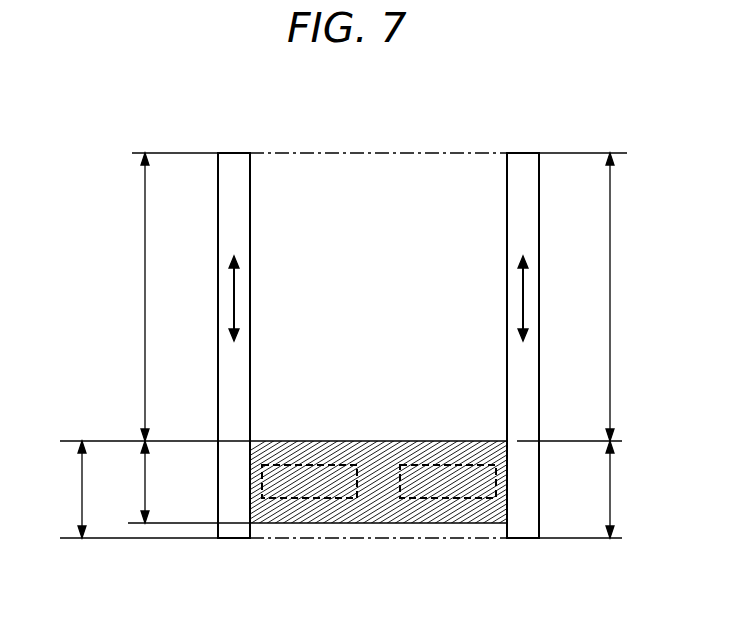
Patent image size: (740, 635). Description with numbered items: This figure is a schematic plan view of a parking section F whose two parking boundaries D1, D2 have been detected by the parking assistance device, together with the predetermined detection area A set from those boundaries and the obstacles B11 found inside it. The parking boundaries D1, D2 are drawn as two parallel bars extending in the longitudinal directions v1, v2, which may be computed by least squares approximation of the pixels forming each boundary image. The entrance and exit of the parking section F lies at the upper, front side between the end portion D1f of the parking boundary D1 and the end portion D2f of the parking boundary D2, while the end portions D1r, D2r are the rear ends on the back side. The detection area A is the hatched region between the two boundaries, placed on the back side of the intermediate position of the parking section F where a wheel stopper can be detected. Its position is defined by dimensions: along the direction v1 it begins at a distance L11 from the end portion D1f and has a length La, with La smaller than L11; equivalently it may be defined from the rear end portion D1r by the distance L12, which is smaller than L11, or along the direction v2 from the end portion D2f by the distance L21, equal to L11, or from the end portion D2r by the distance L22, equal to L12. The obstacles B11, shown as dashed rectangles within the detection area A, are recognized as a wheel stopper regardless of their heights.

The parking boundary D1 is at (256, 208).
The parking boundary D2 is at (500, 208).
The end portion of parking boundary D1 D1f is at (236, 152).
The end portion of parking boundary D2 D2f is at (522, 152).
The end portion of parking boundary D1 D1r is at (232, 540).
The end portion of parking boundary D2 D2r is at (523, 540).
The parking section F is at (376, 182).
The detection area A is at (373, 432).
The obstacles B11 is at (313, 467).
The direction v1 is at (234, 295).
The direction v2 is at (523, 292).
The distance L11 is at (155, 297).
The distance L12 is at (128, 489).
The distance L21 is at (584, 297).
The distance L22 is at (594, 489).
The length of detection area La is at (183, 482).